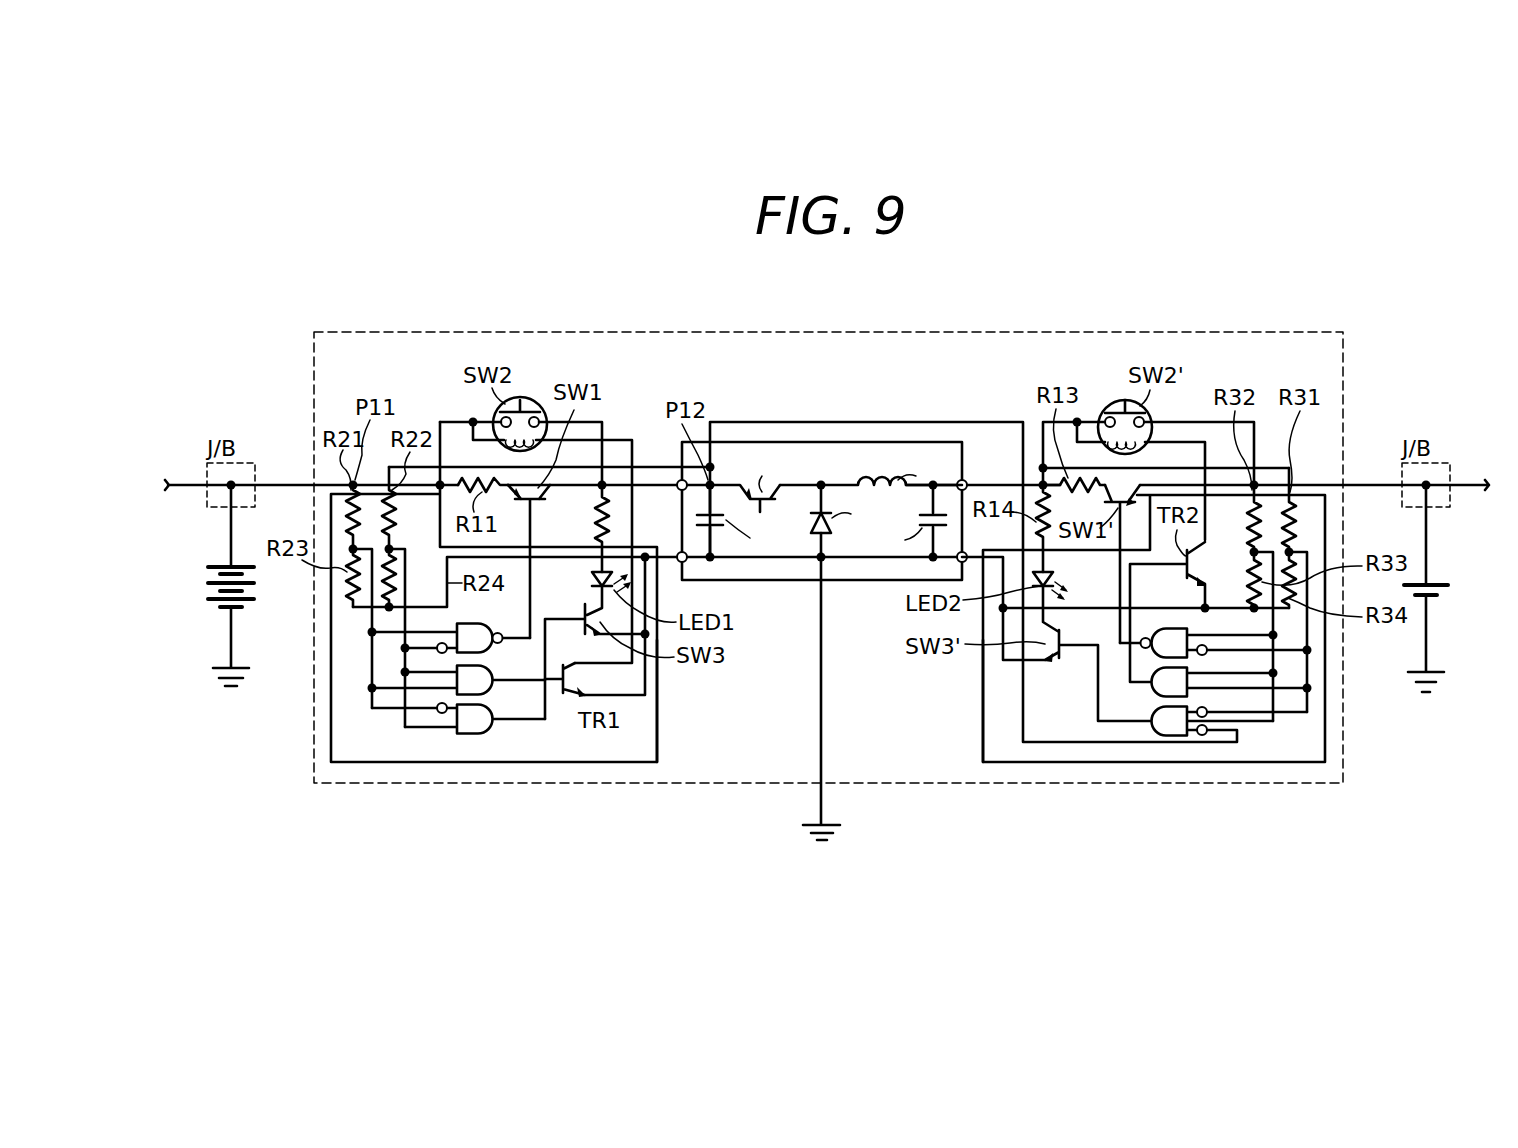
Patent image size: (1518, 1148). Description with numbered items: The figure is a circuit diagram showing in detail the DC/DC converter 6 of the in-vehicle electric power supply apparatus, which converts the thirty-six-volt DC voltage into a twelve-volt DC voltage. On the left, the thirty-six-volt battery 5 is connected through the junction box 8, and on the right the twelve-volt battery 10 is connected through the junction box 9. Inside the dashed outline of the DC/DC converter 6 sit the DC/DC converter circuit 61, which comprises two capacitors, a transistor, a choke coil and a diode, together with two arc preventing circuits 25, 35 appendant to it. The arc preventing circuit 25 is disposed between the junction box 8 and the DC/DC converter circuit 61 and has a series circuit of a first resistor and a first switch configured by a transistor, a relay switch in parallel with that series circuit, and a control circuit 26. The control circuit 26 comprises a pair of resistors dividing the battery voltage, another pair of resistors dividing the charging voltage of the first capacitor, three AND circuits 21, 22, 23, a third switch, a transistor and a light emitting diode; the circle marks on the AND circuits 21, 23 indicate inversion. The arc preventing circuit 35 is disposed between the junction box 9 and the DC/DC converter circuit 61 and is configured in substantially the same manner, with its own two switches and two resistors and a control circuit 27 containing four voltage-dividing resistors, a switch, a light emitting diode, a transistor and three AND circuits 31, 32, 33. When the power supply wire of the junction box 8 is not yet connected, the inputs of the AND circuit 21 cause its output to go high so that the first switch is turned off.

The 36-volt battery 5 is at (206, 592).
The DC/DC converter 6 is at (1290, 332).
The junction box 8 is at (210, 510).
The junction box 9 is at (1442, 510).
The 12-volt battery 10 is at (1450, 594).
The AND circuit 21 is at (490, 655).
The AND circuit 22 is at (490, 697).
The AND circuit 23 is at (490, 736).
The arc preventing circuit 25 is at (672, 738).
The control circuit 26 is at (657, 690).
The control circuit 27 is at (983, 692).
The AND circuit 31 is at (1155, 655).
The AND circuit 32 is at (1158, 695).
The AND circuit 33 is at (1158, 728).
The arc preventing circuit 35 is at (968, 726).
The DC/DC converter circuit 61 is at (840, 582).